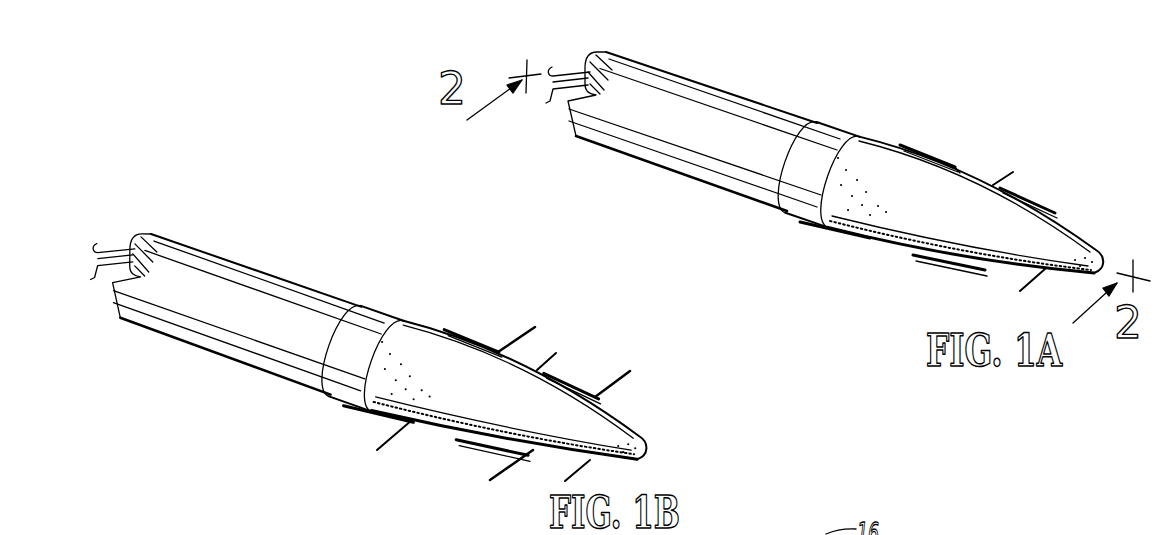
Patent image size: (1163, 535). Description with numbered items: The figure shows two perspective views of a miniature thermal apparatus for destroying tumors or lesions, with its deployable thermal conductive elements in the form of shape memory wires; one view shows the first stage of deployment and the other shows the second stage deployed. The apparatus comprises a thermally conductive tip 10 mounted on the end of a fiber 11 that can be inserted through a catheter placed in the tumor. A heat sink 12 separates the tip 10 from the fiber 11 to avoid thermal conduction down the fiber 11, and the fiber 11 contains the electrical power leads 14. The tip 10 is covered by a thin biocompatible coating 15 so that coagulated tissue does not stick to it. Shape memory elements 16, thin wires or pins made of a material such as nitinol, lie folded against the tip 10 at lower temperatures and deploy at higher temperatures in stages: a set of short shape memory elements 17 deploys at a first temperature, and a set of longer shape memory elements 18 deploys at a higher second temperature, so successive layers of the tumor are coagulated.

In FIG. 1A, the tip 10 is at (839, 194).
In FIG. 1B, the tip 10 is at (380, 377).
In FIG. 1A, the fiber 11 is at (727, 115).
In FIG. 1B, the fiber 11 is at (270, 298).
In FIG. 1A, the heat sink 12 is at (817, 150).
In FIG. 1B, the heat sink 12 is at (360, 328).
In FIG. 1A, the electrical power leads 14 is at (565, 100).
In FIG. 1B, the electrical power leads 14 is at (108, 288).
In FIG. 1A, the thin biocompatible coating 15 is at (912, 215).
In FIG. 1B, the thin biocompatible coating 15 is at (457, 399).
In FIG. 1A, the shape memory elements 16 is at (930, 139).
In FIG. 1B, the shape memory elements 16 is at (501, 321).
In FIG. 1A, the short shape memory elements 17 is at (997, 178).
In FIG. 1B, the short shape memory elements 17 is at (548, 350).
In FIG. 1A, the longer shape memory elements 18 is at (1032, 195).
In FIG. 1B, the longer shape memory elements 18 is at (603, 383).